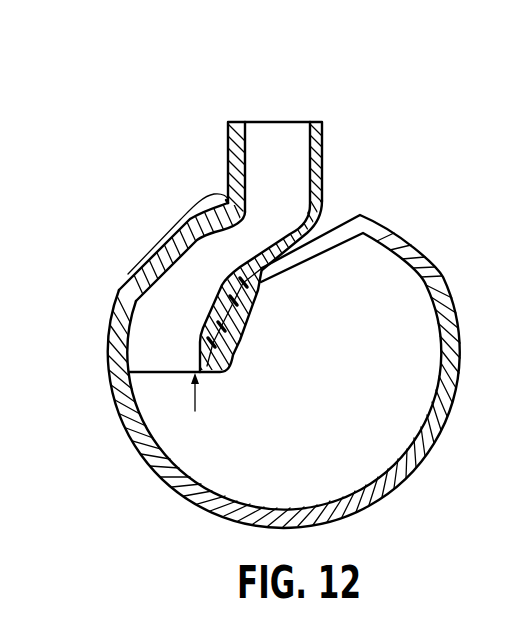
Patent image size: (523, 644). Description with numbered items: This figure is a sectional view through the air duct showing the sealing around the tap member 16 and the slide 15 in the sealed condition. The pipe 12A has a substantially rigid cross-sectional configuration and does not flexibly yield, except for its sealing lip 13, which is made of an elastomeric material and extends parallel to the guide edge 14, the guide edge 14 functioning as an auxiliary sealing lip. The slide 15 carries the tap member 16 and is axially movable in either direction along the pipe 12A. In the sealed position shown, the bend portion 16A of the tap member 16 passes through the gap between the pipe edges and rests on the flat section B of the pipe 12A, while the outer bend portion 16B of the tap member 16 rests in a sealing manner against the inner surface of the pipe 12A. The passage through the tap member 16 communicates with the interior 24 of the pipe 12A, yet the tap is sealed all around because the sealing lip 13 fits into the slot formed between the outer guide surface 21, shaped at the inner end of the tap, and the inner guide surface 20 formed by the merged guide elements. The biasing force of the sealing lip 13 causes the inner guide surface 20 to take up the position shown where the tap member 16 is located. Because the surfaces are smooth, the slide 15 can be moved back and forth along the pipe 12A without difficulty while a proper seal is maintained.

The pipe 12A is at (437, 287).
The sealing lip 13 is at (224, 276).
The guide edge 14 is at (226, 197).
The slide 15 is at (206, 410).
The tap member 16 is at (291, 128).
The bend portion 16A is at (273, 247).
The outer bend portion 16B is at (157, 268).
The inner guide surface 20 is at (246, 325).
The outer guide surface 21 is at (217, 307).
The interior 24 is at (362, 329).
The flat section B is at (308, 256).